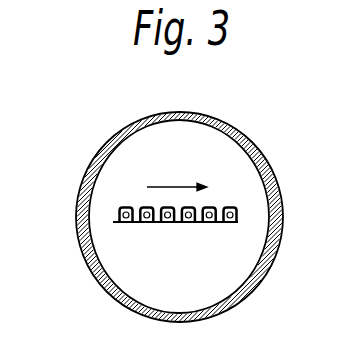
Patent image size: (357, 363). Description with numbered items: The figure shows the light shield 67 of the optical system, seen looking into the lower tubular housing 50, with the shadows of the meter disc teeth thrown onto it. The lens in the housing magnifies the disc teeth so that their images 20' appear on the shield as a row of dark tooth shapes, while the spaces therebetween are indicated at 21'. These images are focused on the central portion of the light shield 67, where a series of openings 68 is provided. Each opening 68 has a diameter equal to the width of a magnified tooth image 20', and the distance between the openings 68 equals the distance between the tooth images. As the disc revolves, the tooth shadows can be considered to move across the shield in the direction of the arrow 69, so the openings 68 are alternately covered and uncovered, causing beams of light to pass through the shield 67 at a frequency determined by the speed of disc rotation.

The lower tubular housing 50 is at (88, 172).
The light shield 67 is at (106, 272).
The arrow 69 is at (173, 186).
The openings 68 is at (228, 207).
The spaces between tooth images 21' is at (156, 237).
The images of the teeth 20' is at (220, 238).